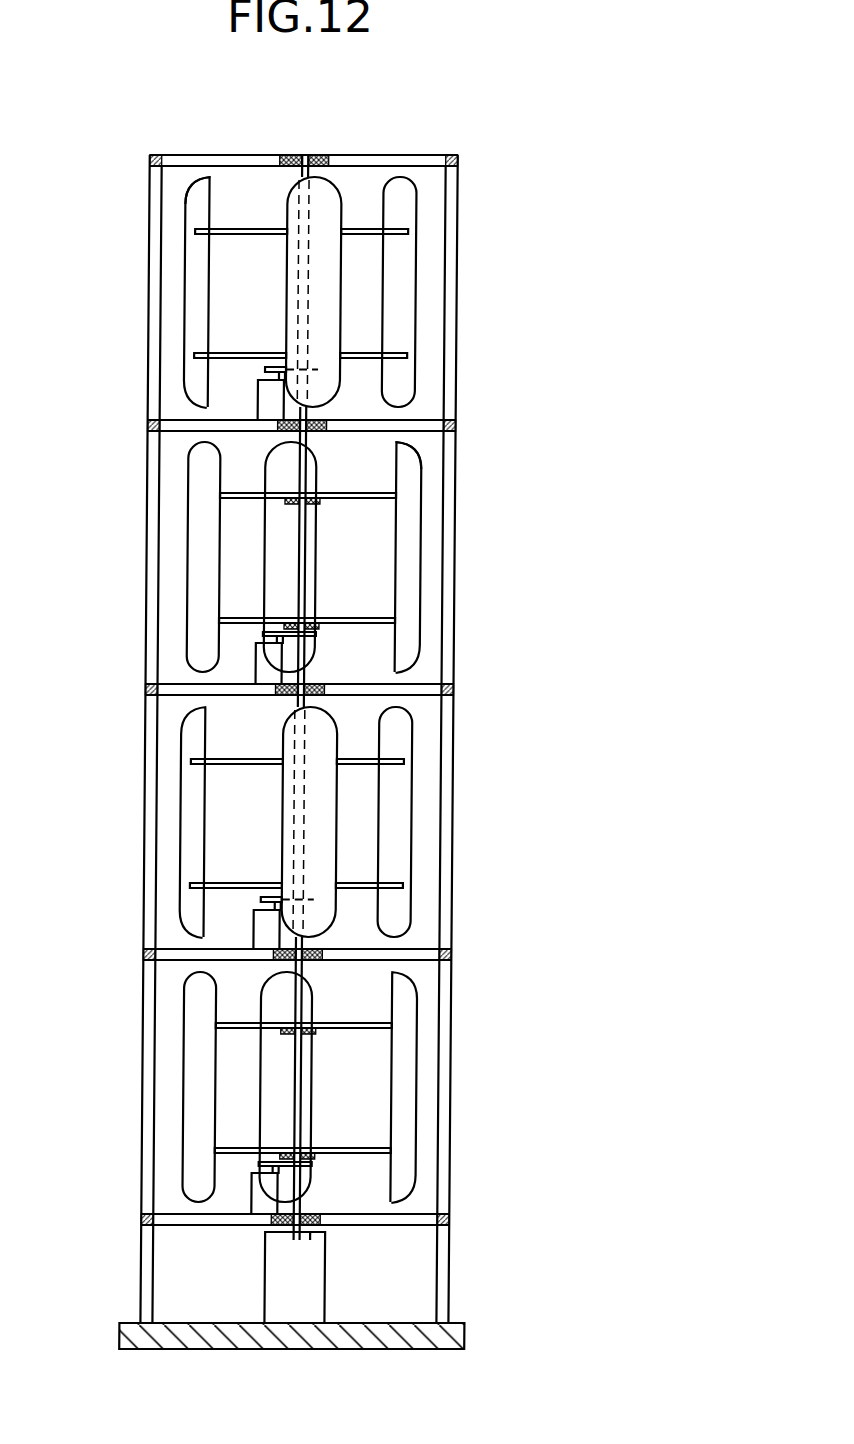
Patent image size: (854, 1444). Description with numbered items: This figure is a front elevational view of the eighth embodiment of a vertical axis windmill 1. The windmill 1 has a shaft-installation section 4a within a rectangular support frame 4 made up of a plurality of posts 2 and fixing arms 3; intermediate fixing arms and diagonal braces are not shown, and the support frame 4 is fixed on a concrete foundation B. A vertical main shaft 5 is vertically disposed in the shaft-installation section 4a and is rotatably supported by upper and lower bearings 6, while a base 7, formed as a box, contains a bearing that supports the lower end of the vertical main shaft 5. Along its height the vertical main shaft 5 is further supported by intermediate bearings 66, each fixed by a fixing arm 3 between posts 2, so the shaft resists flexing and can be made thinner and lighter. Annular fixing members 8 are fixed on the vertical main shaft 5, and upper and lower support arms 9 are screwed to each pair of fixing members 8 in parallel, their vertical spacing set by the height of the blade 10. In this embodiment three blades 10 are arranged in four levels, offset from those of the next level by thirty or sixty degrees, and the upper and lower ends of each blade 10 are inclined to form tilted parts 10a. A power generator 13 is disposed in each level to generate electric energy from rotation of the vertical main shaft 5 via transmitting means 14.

The vertical axis windmill 1 is at (400, 132).
The post 2 is at (151, 232).
The fixing arm 3 is at (151, 158).
The support frame 4 is at (127, 877).
The shaft-installation section 4a is at (223, 1311).
The vertical main shaft 5 is at (307, 156).
The bearing 6 is at (317, 156).
The base 7 is at (313, 1294).
The fixing member 8 is at (315, 504).
The support arm 9 is at (243, 765).
The blade 10 is at (187, 296).
The tilted part 10a is at (214, 181).
The power generator 13 is at (261, 406).
The transmitting means 14 is at (277, 367).
The intermediate bearing 66 is at (302, 431).
The concrete foundation B is at (465, 1324).